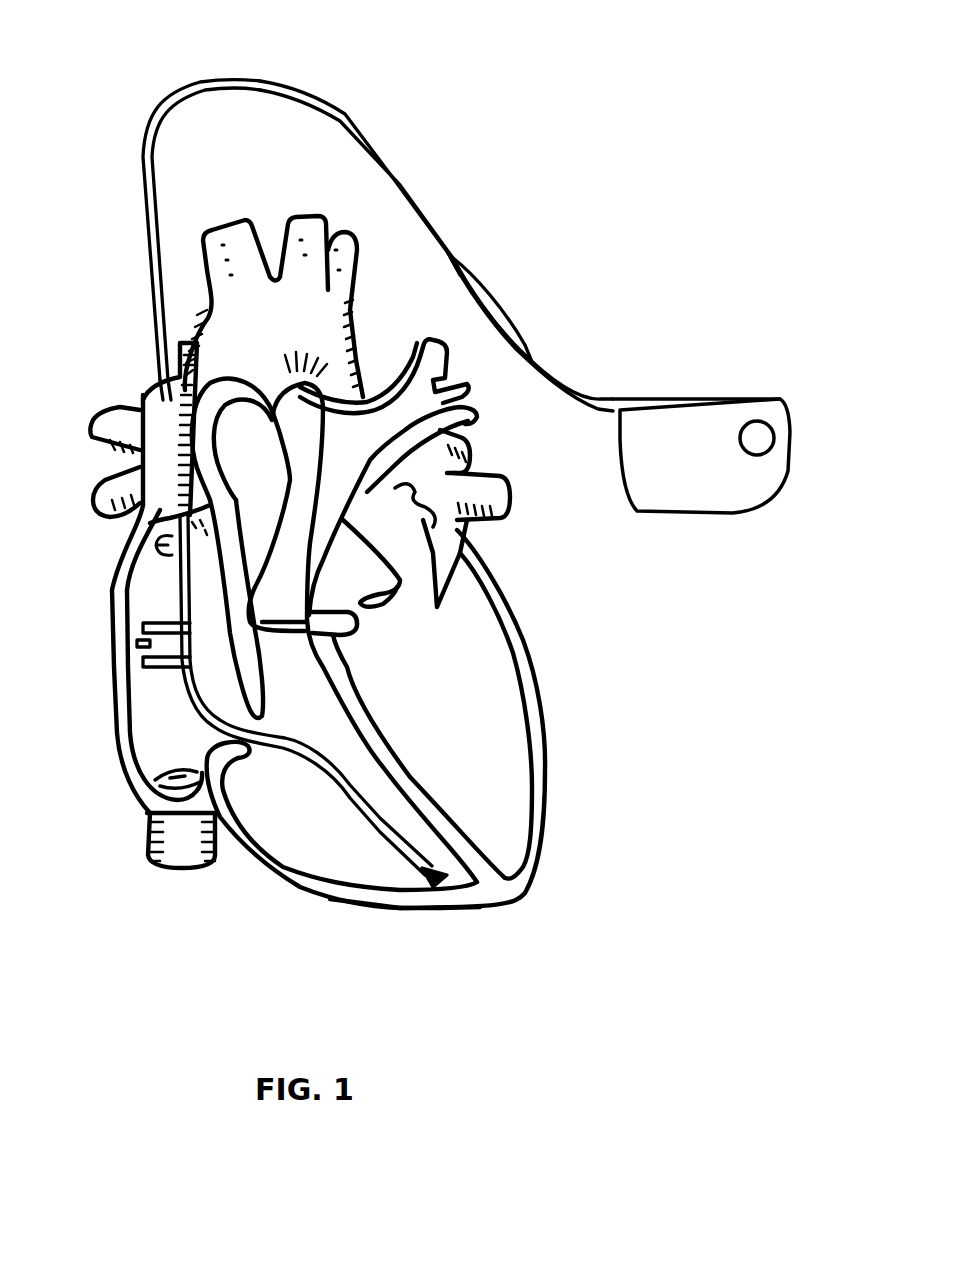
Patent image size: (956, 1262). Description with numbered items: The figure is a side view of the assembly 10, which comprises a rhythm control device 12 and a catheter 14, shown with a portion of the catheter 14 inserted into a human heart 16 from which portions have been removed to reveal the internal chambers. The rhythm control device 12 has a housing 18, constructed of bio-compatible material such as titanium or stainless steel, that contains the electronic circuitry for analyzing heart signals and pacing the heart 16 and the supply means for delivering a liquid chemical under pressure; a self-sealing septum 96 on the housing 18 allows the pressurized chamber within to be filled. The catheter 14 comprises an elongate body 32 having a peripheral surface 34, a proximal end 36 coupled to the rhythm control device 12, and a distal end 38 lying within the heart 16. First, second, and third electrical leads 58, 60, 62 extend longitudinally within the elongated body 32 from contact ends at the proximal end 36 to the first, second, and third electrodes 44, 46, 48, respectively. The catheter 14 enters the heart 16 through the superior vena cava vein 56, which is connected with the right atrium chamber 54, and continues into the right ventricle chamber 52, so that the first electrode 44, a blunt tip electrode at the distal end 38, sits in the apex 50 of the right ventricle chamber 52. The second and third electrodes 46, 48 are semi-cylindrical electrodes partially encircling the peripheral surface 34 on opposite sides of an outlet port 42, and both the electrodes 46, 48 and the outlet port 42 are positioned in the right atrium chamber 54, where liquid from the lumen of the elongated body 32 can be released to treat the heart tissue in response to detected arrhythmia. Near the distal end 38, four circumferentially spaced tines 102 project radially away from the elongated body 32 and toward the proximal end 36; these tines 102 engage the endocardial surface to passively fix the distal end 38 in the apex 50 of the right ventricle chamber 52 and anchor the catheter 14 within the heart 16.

The assembly 10 is at (442, 445).
The rhythm control device 12 is at (690, 374).
The catheter 14 is at (357, 110).
The heart 16 is at (557, 715).
The housing 18 is at (747, 492).
The elongate body 32 is at (288, 88).
The peripheral surface 34 is at (202, 80).
The proximal end 36 is at (620, 410).
The distal end 38 is at (390, 910).
The outlet port 42 is at (137, 641).
The first electrode 44 is at (415, 910).
The second electrode 46 is at (143, 663).
The third electrode 48 is at (143, 630).
The apex 50 is at (463, 910).
The right ventricle chamber 52 is at (255, 658).
The right atrium chamber 54 is at (165, 686).
The superior vena cava vein 56 is at (159, 454).
The first electrical lead 58 is at (503, 345).
The second electrical lead 60 is at (490, 298).
The third electrical lead 62 is at (465, 262).
The self-sealing septum 96 is at (760, 438).
The tines 102 is at (443, 850).